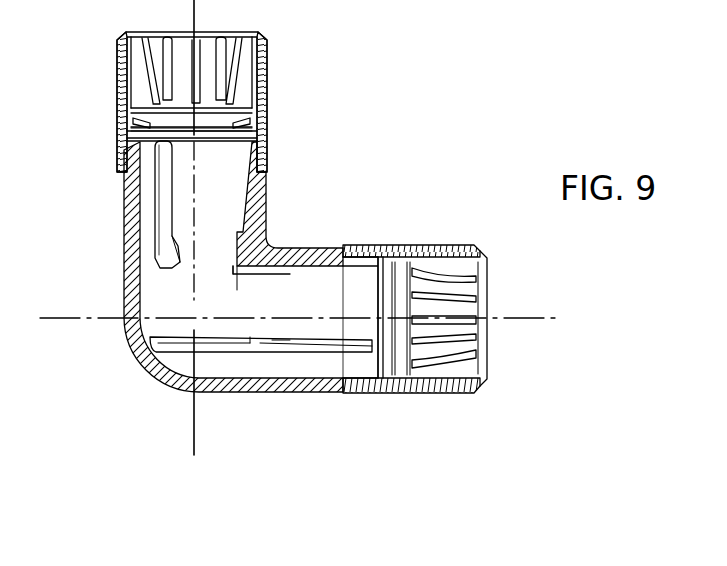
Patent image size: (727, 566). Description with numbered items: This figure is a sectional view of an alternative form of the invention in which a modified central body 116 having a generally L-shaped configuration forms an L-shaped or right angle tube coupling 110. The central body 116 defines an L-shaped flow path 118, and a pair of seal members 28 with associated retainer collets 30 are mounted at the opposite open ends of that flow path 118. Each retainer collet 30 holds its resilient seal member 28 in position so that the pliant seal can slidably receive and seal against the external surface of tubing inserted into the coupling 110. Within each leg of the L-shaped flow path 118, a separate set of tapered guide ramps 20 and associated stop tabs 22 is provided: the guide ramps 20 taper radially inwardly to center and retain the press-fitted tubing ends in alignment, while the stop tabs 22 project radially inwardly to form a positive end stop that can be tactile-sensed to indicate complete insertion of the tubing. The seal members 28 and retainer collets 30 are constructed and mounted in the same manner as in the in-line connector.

The right angle tube coupling 110 is at (250, 420).
The modified central body 116 is at (152, 382).
The L-shaped flow path 118 is at (285, 292).
The retainer collet 30 is at (118, 72).
The seal member 28 is at (250, 193).
The guide ramp 20 is at (165, 210).
The stop tab 22 is at (247, 232).